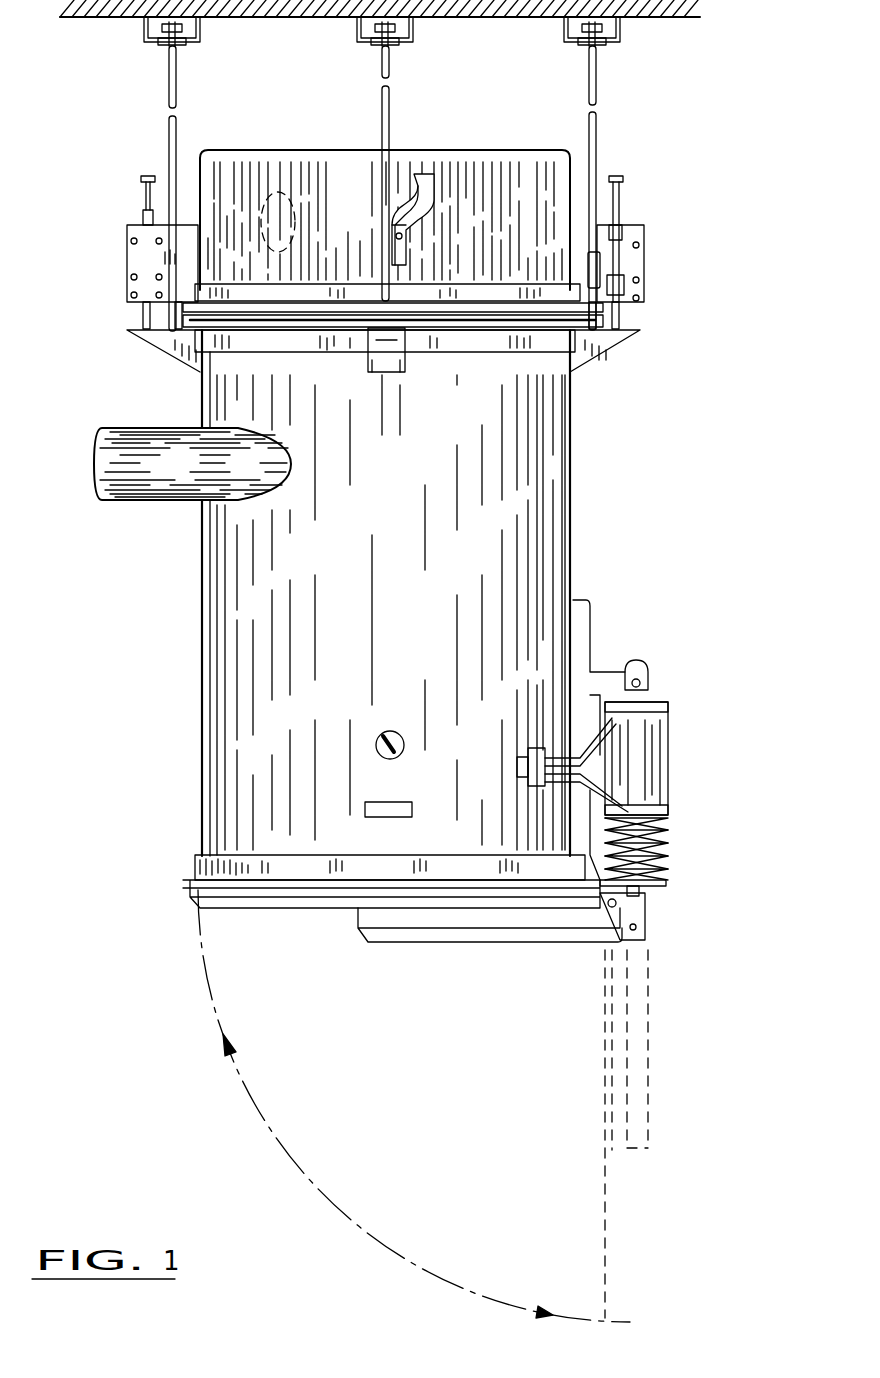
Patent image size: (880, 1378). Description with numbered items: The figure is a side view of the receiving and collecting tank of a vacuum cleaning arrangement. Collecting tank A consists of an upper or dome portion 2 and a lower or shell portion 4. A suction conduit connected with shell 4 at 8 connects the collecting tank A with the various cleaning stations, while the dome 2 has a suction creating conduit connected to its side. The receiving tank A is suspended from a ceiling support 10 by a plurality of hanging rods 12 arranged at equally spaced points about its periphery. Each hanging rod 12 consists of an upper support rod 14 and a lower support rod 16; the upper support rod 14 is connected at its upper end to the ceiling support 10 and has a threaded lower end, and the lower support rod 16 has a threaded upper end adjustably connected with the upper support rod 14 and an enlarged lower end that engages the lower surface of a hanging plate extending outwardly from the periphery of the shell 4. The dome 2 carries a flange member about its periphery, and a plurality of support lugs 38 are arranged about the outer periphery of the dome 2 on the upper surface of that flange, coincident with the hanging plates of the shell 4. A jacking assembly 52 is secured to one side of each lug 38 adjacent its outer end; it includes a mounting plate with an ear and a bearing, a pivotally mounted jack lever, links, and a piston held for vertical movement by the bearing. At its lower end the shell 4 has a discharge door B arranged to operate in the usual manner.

The dome portion 2 is at (488, 140).
The shell portion 4 is at (165, 780).
The suction conduit connection 8 is at (163, 505).
The ceiling support 10 is at (565, 38).
The hanging rods 12 is at (365, 123).
The upper support rod 14 is at (604, 142).
The lower support rod 16 is at (598, 330).
The support lugs 38 is at (642, 284).
The jacking assembly 52 is at (643, 215).
The collecting tank A is at (603, 503).
The discharge door B is at (306, 928).